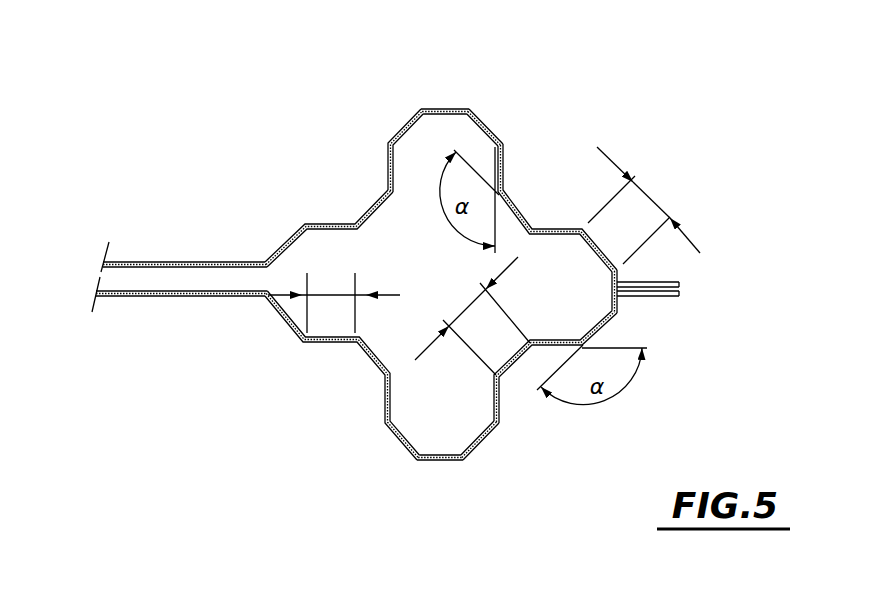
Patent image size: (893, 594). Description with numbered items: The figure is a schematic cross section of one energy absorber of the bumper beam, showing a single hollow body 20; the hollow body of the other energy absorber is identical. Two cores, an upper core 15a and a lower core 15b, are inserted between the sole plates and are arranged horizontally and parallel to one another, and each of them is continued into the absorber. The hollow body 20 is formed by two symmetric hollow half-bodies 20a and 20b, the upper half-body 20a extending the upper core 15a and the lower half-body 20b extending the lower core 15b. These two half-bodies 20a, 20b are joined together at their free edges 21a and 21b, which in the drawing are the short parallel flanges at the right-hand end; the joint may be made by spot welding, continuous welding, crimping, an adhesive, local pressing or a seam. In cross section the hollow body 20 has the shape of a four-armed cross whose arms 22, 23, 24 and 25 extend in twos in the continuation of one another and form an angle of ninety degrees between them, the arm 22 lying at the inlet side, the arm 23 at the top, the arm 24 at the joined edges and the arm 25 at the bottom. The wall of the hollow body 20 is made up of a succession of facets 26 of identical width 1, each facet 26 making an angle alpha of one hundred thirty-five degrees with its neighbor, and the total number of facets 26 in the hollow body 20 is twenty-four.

The upper core 15a is at (192, 260).
The lower core 15b is at (138, 300).
The hollow body 20 is at (505, 280).
The hollow half-body 20a is at (424, 148).
The hollow half-body 20b is at (440, 400).
The free edge 21a is at (653, 283).
The free edge 21b is at (670, 297).
The arm 22 is at (307, 260).
The arm 23 is at (438, 133).
The arm 24 is at (570, 305).
The arm 25 is at (462, 417).
The facet 26 is at (488, 130).
The facet width 1 is at (484, 261).